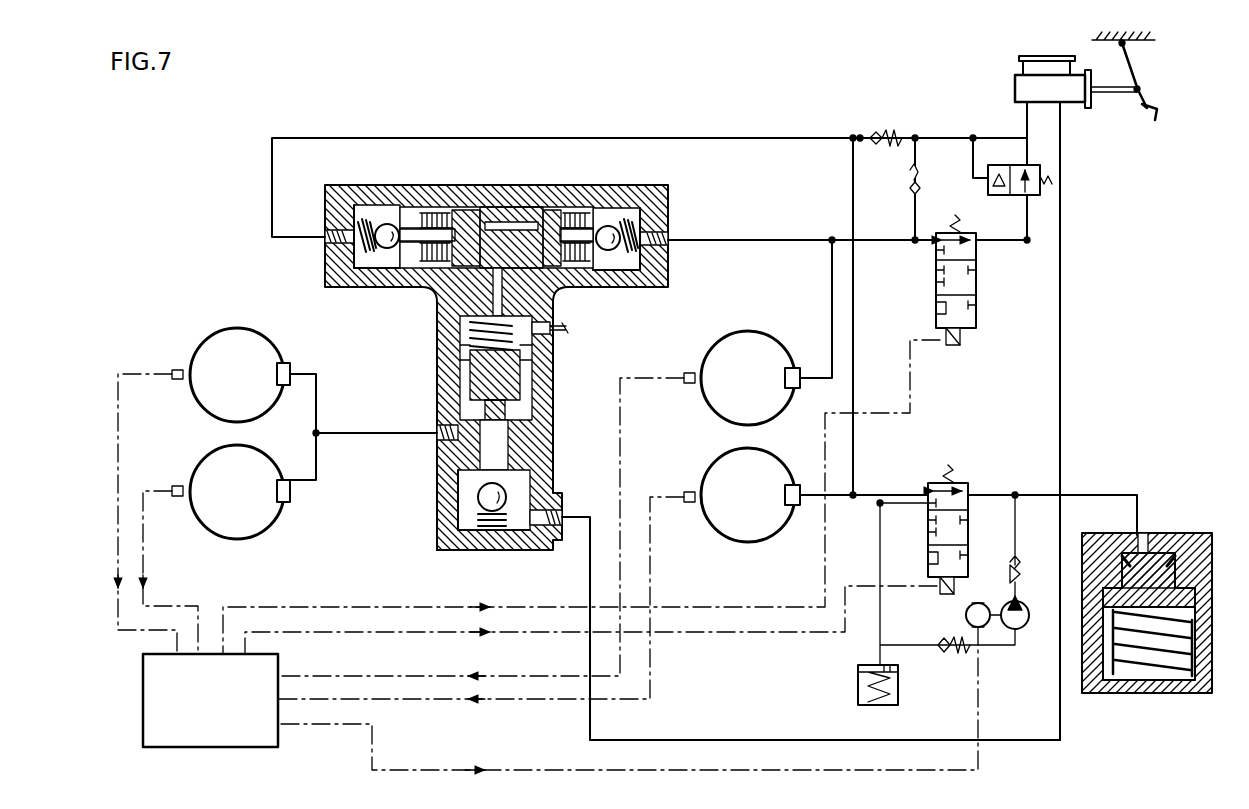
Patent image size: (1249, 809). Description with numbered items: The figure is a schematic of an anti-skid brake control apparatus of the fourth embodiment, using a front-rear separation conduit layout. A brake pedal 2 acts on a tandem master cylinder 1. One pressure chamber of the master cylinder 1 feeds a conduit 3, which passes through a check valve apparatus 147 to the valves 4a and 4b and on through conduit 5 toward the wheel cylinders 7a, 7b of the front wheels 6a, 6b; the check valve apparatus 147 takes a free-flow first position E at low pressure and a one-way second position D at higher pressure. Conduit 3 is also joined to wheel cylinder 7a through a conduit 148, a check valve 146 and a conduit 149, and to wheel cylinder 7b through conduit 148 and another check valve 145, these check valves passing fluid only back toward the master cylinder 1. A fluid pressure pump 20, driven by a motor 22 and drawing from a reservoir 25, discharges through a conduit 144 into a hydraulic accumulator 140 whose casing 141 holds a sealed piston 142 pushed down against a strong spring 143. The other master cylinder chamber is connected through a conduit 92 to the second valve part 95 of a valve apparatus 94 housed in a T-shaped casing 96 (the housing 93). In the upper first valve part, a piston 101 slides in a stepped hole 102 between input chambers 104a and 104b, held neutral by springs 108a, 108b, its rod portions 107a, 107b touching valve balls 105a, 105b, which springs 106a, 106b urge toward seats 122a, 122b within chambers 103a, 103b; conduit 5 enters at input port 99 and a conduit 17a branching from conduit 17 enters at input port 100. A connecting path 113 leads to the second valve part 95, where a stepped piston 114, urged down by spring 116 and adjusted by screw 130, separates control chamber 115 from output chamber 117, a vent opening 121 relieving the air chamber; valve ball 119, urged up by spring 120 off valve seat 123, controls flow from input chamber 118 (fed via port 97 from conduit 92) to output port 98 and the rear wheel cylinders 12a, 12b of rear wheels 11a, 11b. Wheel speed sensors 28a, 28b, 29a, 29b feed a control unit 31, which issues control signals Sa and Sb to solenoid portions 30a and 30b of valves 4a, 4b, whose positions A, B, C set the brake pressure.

The tandem master cylinder 1 is at (1010, 72).
The brake pedal 2 is at (1148, 102).
The conduit 3 is at (1028, 122).
The conduit 5 is at (800, 240).
The valve 4a is at (966, 296).
The valve 4b is at (960, 522).
The front wheel 6a is at (738, 346).
The front wheel 6b is at (718, 462).
The wheel cylinder 7a is at (796, 366).
The wheel cylinder 7b is at (794, 484).
The rear wheel 11a is at (205, 342).
The rear wheel 11b is at (205, 520).
The wheel cylinder 12a is at (282, 362).
The wheel cylinder 12b is at (284, 502).
The conduit 17 is at (804, 500).
The conduit 17a is at (800, 138).
The fluid pressure pump 20 is at (1026, 630).
The motor 22 is at (965, 618).
The reservoir 25 is at (858, 692).
The wheel speed sensor 28a is at (686, 384).
The wheel speed sensor 28b is at (688, 503).
The wheel speed sensor 29a is at (174, 380).
The wheel speed sensor 29b is at (170, 488).
The solenoid portion 30a is at (960, 342).
The solenoid portion 30b is at (946, 594).
The control unit 31 is at (143, 708).
The conduit 92 is at (1062, 182).
The valve housing 93 is at (672, 190).
The valve apparatus / first valve part 94 is at (540, 205).
The second valve part 95 is at (440, 400).
The casing 96 is at (505, 290).
The port 97 is at (560, 514).
The output port 98 is at (440, 432).
The input port 99 is at (668, 240).
The input port 100 is at (330, 242).
The piston 101 is at (510, 207).
The stepped hole 102 is at (380, 246).
The valve chamber 103a is at (684, 166).
The valve chamber 103b is at (370, 205).
The input chamber 104a is at (552, 210).
The input chamber 104b is at (465, 210).
The valve ball 105a is at (630, 262).
The valve ball 105b is at (368, 252).
The spring 106a is at (640, 215).
The spring 106b is at (355, 215).
The rod portion 107a is at (580, 270).
The rod portion 107b is at (430, 248).
The spring 108a is at (577, 212).
The spring 108b is at (445, 212).
The connecting path 113 is at (470, 328).
The stepped piston 114 is at (520, 375).
The control chamber 115 is at (604, 358).
The spring 116 is at (462, 355).
The output chamber 117 is at (508, 440).
The input chamber 118 is at (458, 515).
The valve ball 119 is at (478, 494).
The spring 120 is at (480, 526).
The opening 121 is at (506, 420).
The valve seat 122a is at (578, 229).
The valve seat 122b is at (435, 229).
The valve seat 123 is at (530, 478).
The adjusting screw 130 is at (568, 330).
The hydraulic accumulator 140 is at (1190, 530).
The casing 141 is at (1190, 680).
The piston 142 is at (1145, 570).
The spring 143 is at (1125, 680).
The conduit 144 is at (1100, 495).
The check valve 145 is at (884, 132).
The check valve 146 is at (908, 185).
The check valve apparatus 147 is at (1000, 165).
The conduit 148 is at (946, 138).
The conduit 149 is at (914, 204).
The valve position A is at (978, 246).
The valve position B is at (934, 268).
The valve position C is at (934, 308).
The second position D is at (1000, 196).
The first position E is at (1032, 196).
The control signal Sa is at (694, 606).
The control signal Sb is at (686, 634).